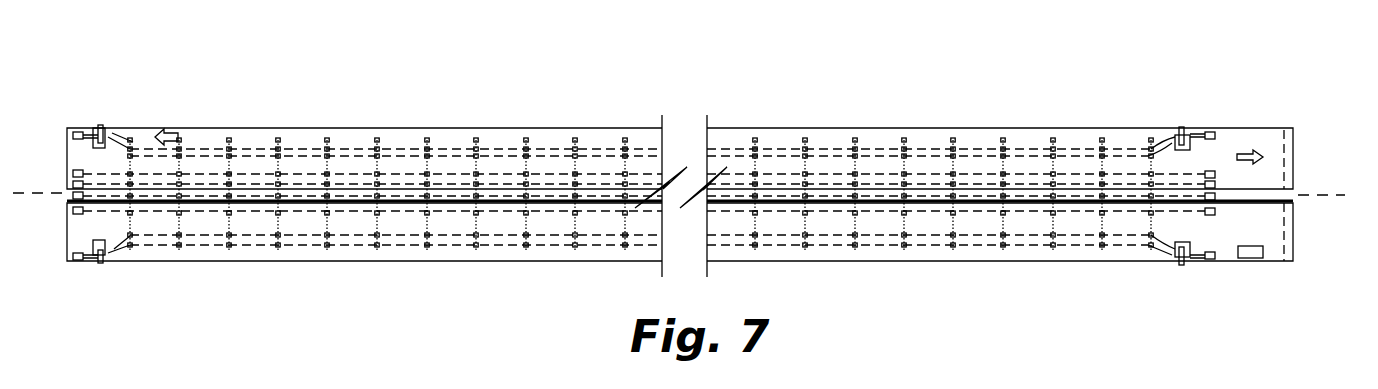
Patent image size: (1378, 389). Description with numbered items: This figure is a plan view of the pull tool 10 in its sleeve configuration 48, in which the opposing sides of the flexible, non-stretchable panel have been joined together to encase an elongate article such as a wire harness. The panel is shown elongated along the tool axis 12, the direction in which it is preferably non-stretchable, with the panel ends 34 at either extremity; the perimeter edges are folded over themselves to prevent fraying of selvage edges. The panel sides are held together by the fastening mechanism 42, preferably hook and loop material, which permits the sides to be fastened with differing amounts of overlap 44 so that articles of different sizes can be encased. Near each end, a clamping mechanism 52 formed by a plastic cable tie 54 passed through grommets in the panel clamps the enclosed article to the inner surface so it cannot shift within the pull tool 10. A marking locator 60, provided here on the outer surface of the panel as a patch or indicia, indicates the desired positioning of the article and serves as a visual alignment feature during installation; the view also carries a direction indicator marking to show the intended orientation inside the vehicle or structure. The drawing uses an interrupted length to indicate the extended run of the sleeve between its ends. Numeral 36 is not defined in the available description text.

The pull tool 10 is at (681, 171).
The sleeve configuration 48 is at (178, 80).
The tool axis 12 is at (23, 193).
The panel ends 34 is at (65, 236).
The skin panel 36 is at (461, 128).
The fastening mechanism 42 is at (240, 177).
The overlap 44 is at (350, 193).
The clamping mechanism 52 is at (640, 197).
The cable tie 54 is at (88, 129).
The marking locator 60 is at (1250, 258).